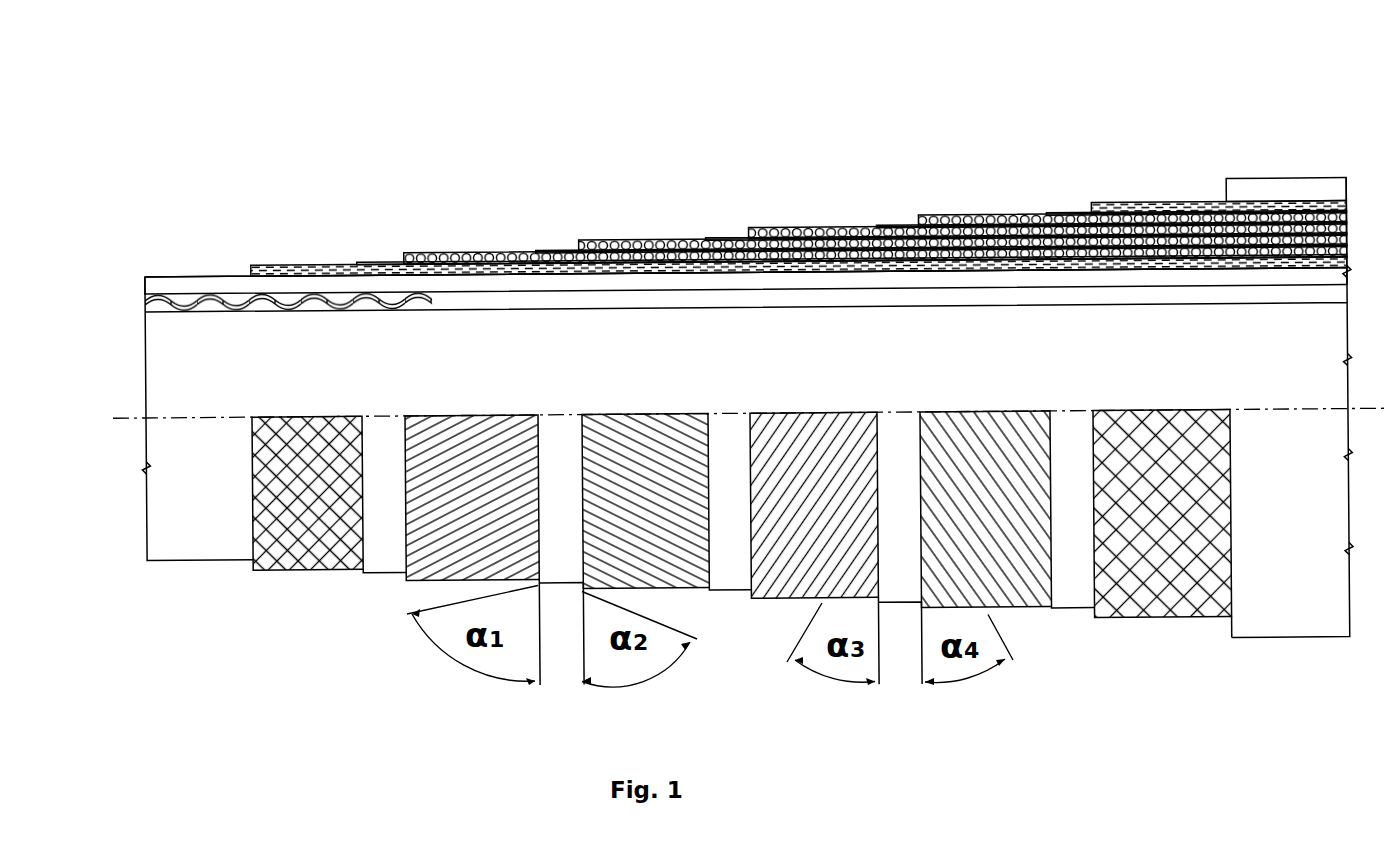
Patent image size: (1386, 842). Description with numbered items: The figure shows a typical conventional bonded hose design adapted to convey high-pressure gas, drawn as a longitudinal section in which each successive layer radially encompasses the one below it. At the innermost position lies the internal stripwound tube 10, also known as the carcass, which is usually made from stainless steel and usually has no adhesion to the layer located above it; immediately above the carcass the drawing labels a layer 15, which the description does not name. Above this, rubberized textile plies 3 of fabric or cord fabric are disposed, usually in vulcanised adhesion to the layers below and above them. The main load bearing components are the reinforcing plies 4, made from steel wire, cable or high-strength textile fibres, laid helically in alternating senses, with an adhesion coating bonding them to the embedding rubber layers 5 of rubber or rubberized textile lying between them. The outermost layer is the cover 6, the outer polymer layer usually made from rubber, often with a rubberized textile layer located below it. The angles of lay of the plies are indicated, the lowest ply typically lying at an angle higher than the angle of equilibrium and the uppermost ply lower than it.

The rubberized textile plies 3 is at (320, 271).
The reinforcing plies 4 is at (445, 259).
The embedding rubber layer 5 is at (383, 265).
The cover 6 is at (1285, 195).
The internal stripwound tube 10 is at (202, 300).
The pressure sheath 15 is at (247, 286).